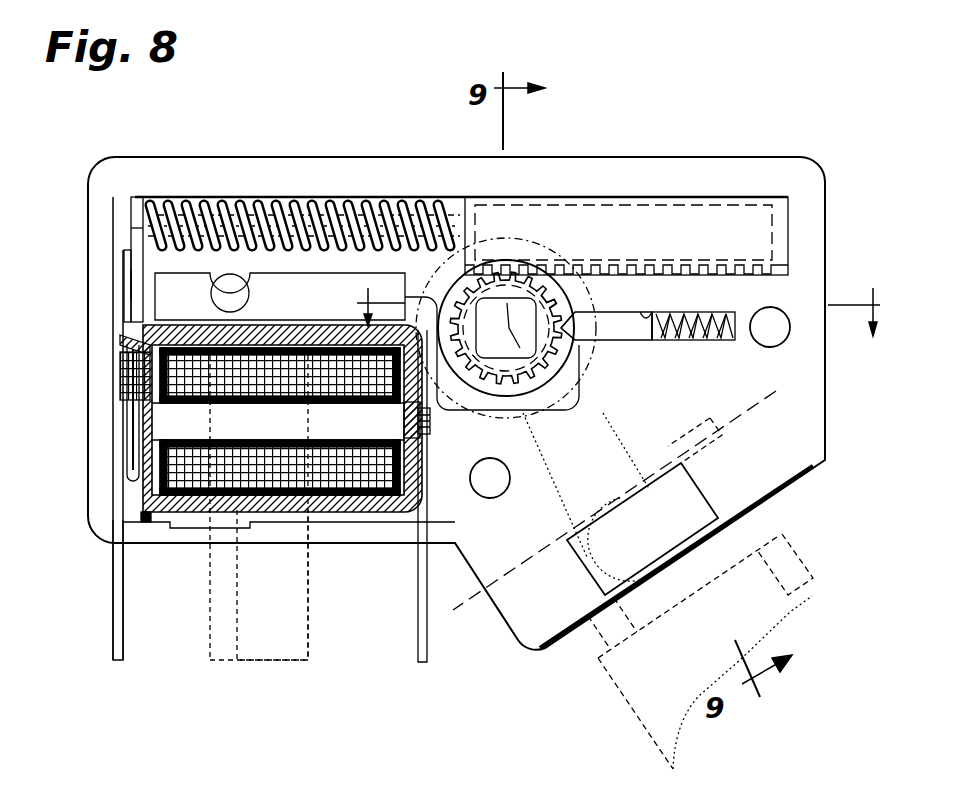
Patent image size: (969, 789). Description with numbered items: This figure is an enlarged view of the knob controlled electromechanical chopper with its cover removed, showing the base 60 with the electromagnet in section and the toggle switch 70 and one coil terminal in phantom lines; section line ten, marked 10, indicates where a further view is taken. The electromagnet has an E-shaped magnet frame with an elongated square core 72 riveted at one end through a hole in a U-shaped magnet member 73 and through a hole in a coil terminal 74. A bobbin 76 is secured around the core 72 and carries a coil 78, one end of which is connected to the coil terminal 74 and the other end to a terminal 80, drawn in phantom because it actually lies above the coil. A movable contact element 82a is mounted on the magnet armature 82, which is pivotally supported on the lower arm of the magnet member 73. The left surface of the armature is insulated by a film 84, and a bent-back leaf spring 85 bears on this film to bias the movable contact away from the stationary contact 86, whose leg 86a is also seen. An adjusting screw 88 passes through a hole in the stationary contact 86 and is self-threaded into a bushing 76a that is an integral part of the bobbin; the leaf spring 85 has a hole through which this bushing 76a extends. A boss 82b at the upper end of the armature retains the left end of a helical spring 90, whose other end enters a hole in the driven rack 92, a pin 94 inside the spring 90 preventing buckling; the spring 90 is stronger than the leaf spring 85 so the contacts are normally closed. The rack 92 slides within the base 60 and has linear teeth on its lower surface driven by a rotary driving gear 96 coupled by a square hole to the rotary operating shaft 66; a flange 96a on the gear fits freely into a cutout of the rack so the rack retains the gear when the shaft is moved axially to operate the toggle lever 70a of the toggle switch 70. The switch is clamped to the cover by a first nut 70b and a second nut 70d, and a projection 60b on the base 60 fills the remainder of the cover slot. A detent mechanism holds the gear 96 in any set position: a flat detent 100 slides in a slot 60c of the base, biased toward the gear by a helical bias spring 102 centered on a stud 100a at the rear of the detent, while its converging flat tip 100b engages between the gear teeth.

The section line 10- 10 is at (631, 307).
The base 60 is at (270, 165).
The projection 60b is at (694, 505).
The slot 60c is at (648, 318).
The rotary operating shaft 66 is at (493, 342).
The toggle switch 70 is at (800, 560).
The toggle lever 70a is at (605, 425).
The first nut 70b is at (745, 520).
The second nut 70d is at (695, 440).
The core 72 is at (355, 430).
The magnet member 73 is at (330, 510).
The coil terminal 74 is at (428, 630).
The bobbin 76 is at (152, 400).
The bushing 76a is at (150, 348).
The coil 78 is at (200, 512).
The terminal 80 is at (285, 660).
The magnet armature 82 is at (152, 523).
The movable contact element 82a is at (133, 278).
The boss 82b is at (140, 230).
The insulator film 84 is at (140, 470).
The leaf spring 85 is at (125, 445).
The stationary contact 86 is at (128, 290).
The retainer leg 86a is at (118, 610).
The adjusting screw 88 is at (118, 366).
The helical spring 90 is at (212, 205).
The driven rack 92 is at (650, 215).
The pin 94 is at (318, 215).
The rotary driving gear 96 is at (560, 302).
The flange 96a is at (550, 300).
The flat detent 100 is at (641, 334).
The stud 100a is at (670, 345).
The converging flat tip 100b is at (600, 335).
The helical bias spring 102 is at (700, 340).